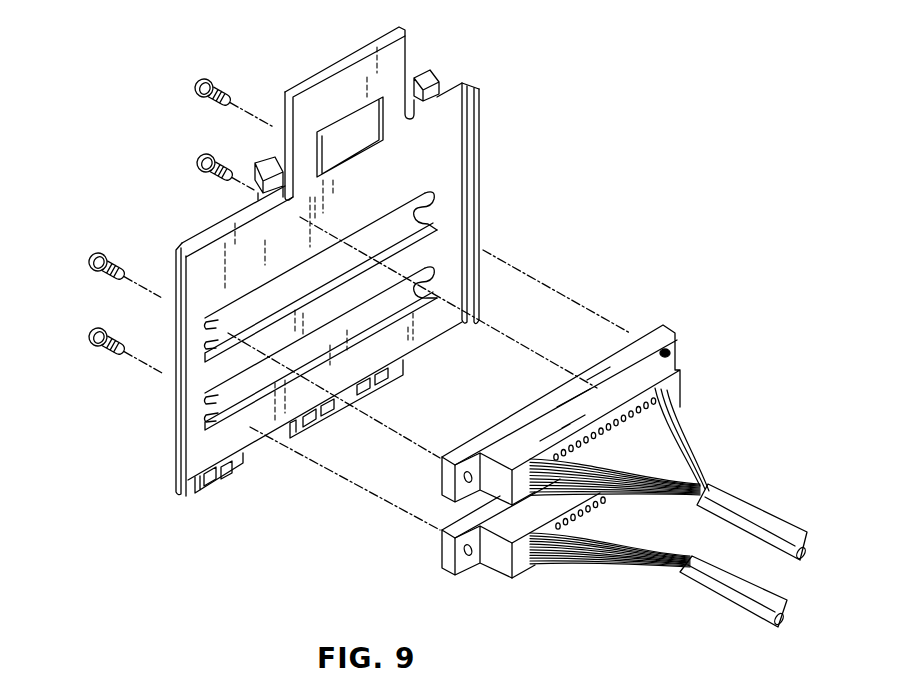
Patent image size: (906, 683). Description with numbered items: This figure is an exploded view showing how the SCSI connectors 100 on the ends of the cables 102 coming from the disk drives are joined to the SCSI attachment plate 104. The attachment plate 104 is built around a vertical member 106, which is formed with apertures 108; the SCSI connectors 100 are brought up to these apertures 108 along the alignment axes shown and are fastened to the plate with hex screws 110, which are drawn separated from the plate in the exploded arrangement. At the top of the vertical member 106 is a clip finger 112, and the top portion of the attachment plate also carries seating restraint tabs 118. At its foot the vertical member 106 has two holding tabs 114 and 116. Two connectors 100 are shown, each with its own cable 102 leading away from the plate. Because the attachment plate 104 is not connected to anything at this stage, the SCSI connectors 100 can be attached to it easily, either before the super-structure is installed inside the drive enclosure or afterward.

The SCSI connector 100 is at (668, 325).
The cable 102 is at (743, 503).
The SCSI attachment plate 104 is at (479, 86).
The vertical member 106 is at (186, 244).
The aperture 108 is at (320, 343).
The hex screw 110 is at (97, 345).
The clip finger 112 is at (342, 133).
The holding tab 114 is at (215, 493).
The holding tab 116 is at (383, 387).
The seating restraint tab 118 is at (422, 72).